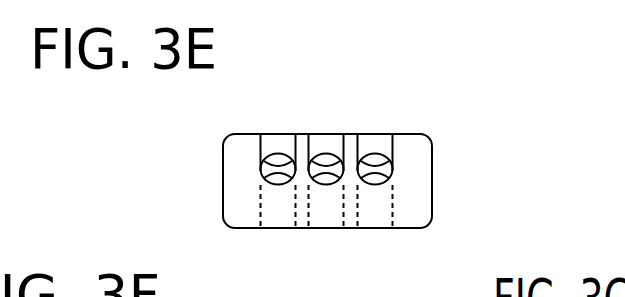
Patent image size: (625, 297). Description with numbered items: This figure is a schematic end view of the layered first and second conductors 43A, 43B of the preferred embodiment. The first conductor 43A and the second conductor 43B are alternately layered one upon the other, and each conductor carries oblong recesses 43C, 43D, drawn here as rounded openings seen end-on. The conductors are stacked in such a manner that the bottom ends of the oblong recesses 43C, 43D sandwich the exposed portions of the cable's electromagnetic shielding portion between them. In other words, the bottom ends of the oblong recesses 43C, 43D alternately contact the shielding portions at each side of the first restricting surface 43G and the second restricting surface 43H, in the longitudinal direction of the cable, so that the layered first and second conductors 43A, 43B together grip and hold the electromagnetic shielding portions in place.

The first conductor 43A is at (382, 135).
The second conductor 43B is at (432, 182).
The oblong recess 43C is at (373, 157).
The oblong recess 43D is at (279, 182).
The first restricting surface 43G is at (277, 134).
The second restricting surface 43H is at (400, 229).